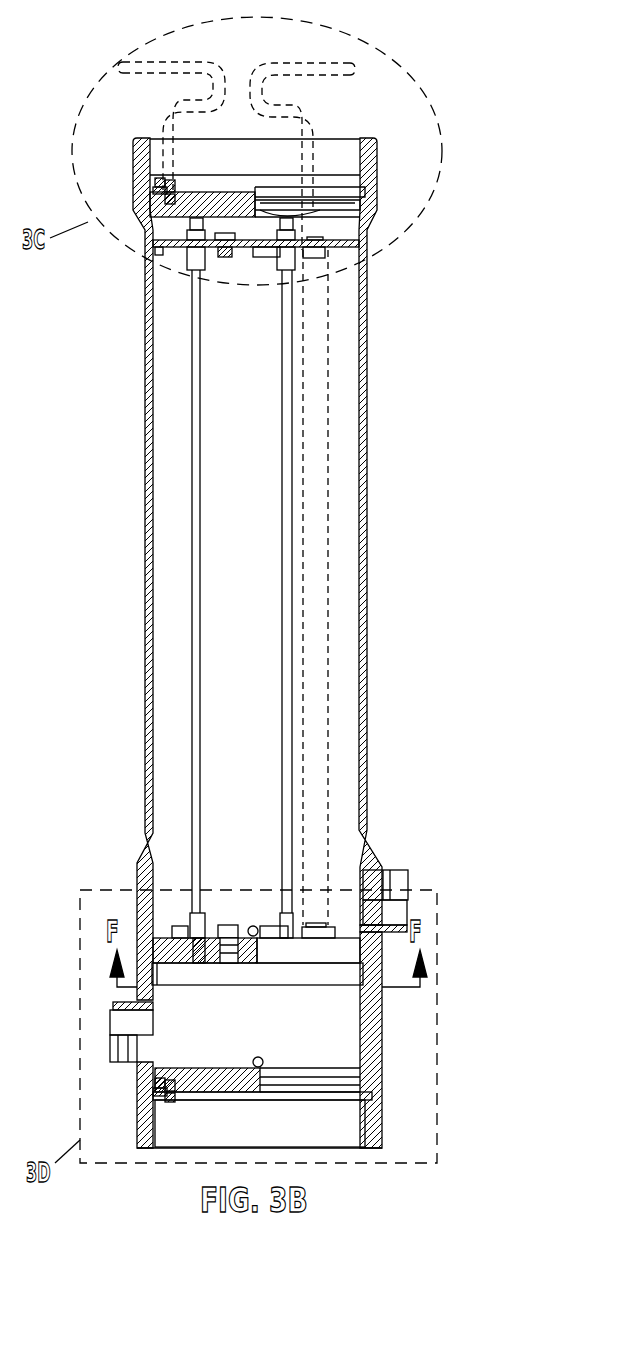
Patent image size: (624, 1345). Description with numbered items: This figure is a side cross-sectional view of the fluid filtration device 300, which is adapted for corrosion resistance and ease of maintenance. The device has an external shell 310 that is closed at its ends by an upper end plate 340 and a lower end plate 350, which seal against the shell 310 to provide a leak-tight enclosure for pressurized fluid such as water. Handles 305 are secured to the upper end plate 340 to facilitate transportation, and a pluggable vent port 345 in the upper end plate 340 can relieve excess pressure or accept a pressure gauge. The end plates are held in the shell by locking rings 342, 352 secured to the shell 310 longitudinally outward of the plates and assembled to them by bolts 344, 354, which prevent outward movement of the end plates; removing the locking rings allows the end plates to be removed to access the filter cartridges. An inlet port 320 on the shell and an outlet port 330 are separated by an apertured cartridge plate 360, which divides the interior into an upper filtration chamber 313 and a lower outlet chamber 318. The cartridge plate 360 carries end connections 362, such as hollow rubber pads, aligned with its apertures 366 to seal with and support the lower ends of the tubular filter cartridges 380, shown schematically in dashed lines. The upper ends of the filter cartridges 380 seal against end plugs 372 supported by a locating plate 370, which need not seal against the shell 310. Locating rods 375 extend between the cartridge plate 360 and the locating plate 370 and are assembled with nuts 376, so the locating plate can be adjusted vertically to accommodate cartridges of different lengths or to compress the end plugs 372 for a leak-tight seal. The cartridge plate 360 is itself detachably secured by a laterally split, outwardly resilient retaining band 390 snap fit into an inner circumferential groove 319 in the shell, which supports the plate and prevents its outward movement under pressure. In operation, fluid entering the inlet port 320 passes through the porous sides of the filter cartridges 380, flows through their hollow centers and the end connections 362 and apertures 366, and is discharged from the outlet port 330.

The fluid filtration device 300 is at (102, 485).
The handles 305 is at (297, 57).
The external shell 310 is at (148, 620).
The upper filtration chamber 313 is at (181, 680).
The lower outlet chamber 318 is at (355, 1052).
The inner circumferential groove 319 is at (348, 973).
The inlet port 320 is at (403, 870).
The outlet port 330 is at (115, 1003).
The upper end plate 340 is at (190, 212).
The locking ring 342 is at (157, 178).
The bolts 344 is at (162, 182).
The pluggable vent port 345 is at (290, 205).
The lower end plate 350 is at (148, 1062).
The locking ring 352 is at (143, 1100).
The bolts 354 is at (175, 1108).
The cartridge plate 360 is at (165, 938).
The end connections 362 is at (318, 920).
The apertures 366 is at (247, 962).
The locating plate 370 is at (343, 250).
The end plugs 372 is at (318, 250).
The locating rods 375 is at (268, 757).
The nuts 376 is at (165, 250).
The filter cartridges 380 is at (328, 458).
The retaining band 390 is at (180, 975).